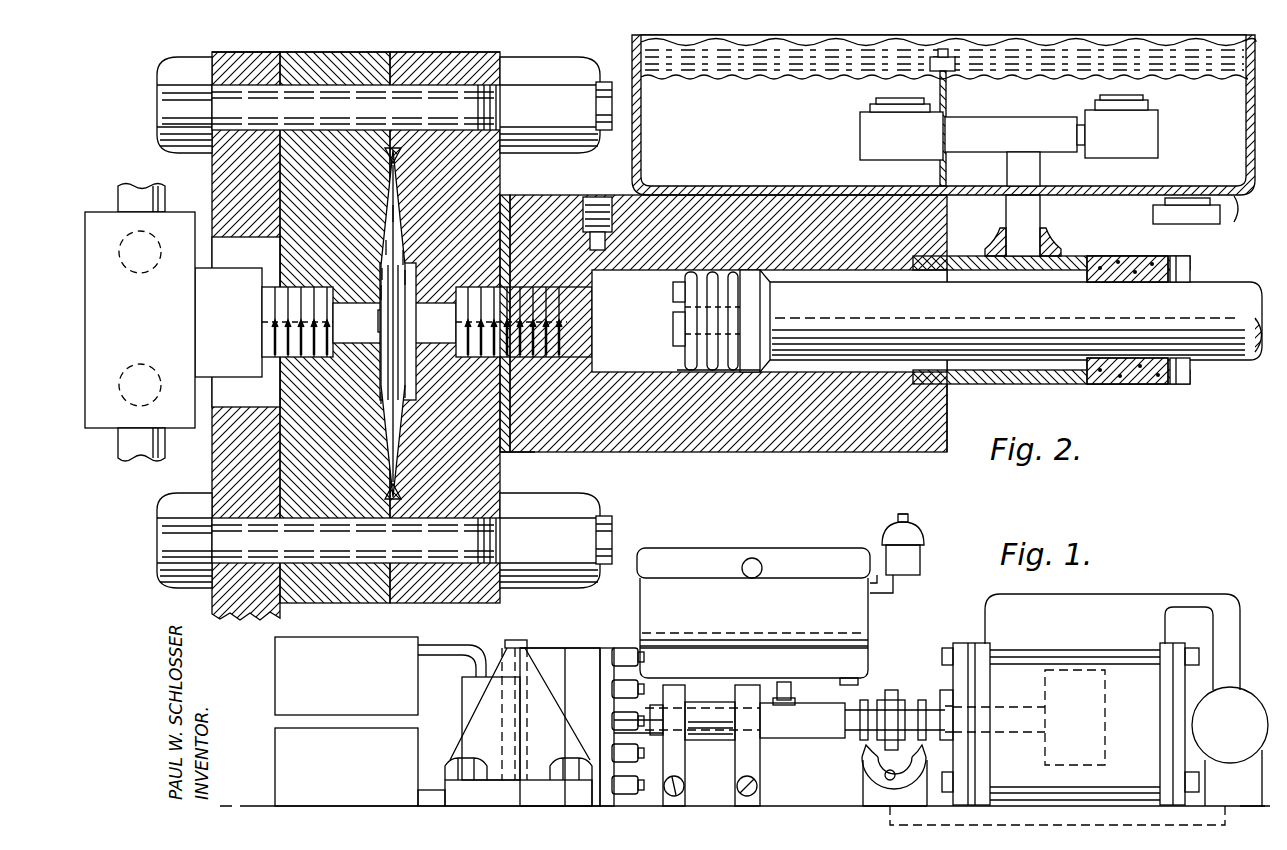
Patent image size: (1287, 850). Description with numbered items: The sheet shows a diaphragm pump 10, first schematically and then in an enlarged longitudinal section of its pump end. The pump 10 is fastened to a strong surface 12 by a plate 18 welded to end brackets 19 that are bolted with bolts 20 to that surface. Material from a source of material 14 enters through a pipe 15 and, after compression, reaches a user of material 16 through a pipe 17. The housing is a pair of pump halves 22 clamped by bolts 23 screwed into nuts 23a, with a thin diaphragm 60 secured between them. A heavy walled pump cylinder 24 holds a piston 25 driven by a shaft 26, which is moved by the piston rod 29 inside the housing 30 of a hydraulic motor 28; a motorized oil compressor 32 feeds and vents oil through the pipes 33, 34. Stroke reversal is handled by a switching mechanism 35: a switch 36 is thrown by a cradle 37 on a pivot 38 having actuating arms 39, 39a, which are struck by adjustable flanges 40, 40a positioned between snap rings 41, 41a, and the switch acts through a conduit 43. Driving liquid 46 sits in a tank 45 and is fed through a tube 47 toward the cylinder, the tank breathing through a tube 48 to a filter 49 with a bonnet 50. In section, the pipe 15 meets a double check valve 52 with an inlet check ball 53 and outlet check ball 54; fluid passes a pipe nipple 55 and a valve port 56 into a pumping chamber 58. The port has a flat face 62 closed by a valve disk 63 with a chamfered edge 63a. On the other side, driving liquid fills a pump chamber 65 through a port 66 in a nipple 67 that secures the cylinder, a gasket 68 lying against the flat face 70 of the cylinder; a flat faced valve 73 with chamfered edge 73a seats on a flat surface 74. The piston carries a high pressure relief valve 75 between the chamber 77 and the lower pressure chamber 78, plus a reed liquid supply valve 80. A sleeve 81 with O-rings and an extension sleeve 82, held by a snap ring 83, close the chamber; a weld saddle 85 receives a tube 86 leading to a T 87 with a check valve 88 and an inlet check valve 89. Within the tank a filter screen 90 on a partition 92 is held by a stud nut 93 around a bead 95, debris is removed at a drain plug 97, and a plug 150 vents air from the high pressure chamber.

In FIG. 2, the pump 10 is at (198, 46).
In FIG. 1, the pump 10 is at (551, 624).
In FIG. 1, the surface 12 is at (590, 805).
In FIG. 1, the source of material 14 is at (275, 746).
In FIG. 2, the pipe 15 is at (120, 447).
In FIG. 1, the pipe 15 is at (428, 788).
In FIG. 1, the user of material 16 is at (275, 680).
In FIG. 2, the pipe 17 is at (118, 196).
In FIG. 1, the pipe 17 is at (432, 646).
In FIG. 2, the plate 18 is at (245, 616).
In FIG. 1, the plate 18 is at (512, 640).
In FIG. 1, the end brackets 19 is at (468, 805).
In FIG. 1, the bolts 20 is at (462, 762).
In FIG. 2, the pump halves 22 is at (352, 56).
In FIG. 1, the pump halves 22 is at (560, 648).
In FIG. 2, the bolts 23 is at (160, 72).
In FIG. 1, the bolts 23 is at (650, 672).
In FIG. 2, the nuts 23a is at (546, 57).
In FIG. 1, the nuts 23a is at (612, 652).
In FIG. 2, the pump cylinder 24 is at (638, 452).
In FIG. 1, the pump cylinder 24 is at (690, 752).
In FIG. 2, the piston 25 is at (657, 356).
In FIG. 1, the piston 25 is at (676, 705).
In FIG. 2, the shaft 26 is at (1052, 322).
In FIG. 1, the shaft 26 is at (784, 738).
In FIG. 1, the hydraulic motor 28 is at (967, 598).
In FIG. 1, the piston rod 29 is at (1106, 752).
In FIG. 1, the housing 30 is at (1022, 690).
In FIG. 1, the oil compressor 32 is at (1240, 733).
In FIG. 1, the pipe 33 is at (1082, 596).
In FIG. 1, the pipe 34 is at (1192, 608).
In FIG. 1, the switching mechanism 35 is at (911, 638).
In FIG. 1, the switch 36 is at (862, 796).
In FIG. 1, the cradle 37 is at (866, 776).
In FIG. 1, the pivot 38 is at (891, 781).
In FIG. 1, the actuating arm 39 is at (928, 758).
In FIG. 1, the actuating arm 39a is at (870, 757).
In FIG. 1, the adjustable flange 40 is at (910, 680).
In FIG. 1, the adjustable flange 40a is at (887, 690).
In FIG. 1, the snap ring 41 is at (922, 698).
In FIG. 1, the snap ring 41a is at (860, 705).
In FIG. 1, the conduit 43 is at (1016, 826).
In FIG. 2, the tank 45 is at (1222, 222).
In FIG. 1, the tank 45 is at (752, 617).
In FIG. 1, the driving liquid 46 is at (794, 632).
In FIG. 1, the tube 47 is at (790, 690).
In FIG. 1, the tube 48 is at (875, 575).
In FIG. 1, the filter 49 is at (920, 552).
In FIG. 1, the bonnet 50 is at (910, 520).
In FIG. 2, the double check valve 52 is at (124, 320).
In FIG. 2, the inlet check ball 53 is at (158, 376).
In FIG. 2, the outlet check ball 54 is at (160, 262).
In FIG. 2, the pipe nipple 55 is at (268, 282).
In FIG. 2, the valve port 56 is at (312, 328).
In FIG. 2, the pumping chamber 58 is at (384, 246).
In FIG. 2, the diaphragm 60 is at (388, 218).
In FIG. 2, the flat face 62 is at (380, 273).
In FIG. 2, the valve disk 63 is at (380, 288).
In FIG. 2, the chamfered edge 63a is at (380, 400).
In FIG. 2, the pump chamber 65 is at (412, 230).
In FIG. 2, the port 66 is at (412, 340).
In FIG. 2, the nipple 67 is at (473, 286).
In FIG. 2, the gasket 68 is at (506, 195).
In FIG. 2, the flat face 70 is at (514, 452).
In FIG. 2, the flat faced valve 73 is at (410, 280).
In FIG. 2, the chamfered edge 73a is at (412, 392).
In FIG. 2, the flat surface 74 is at (410, 257).
In FIG. 2, the high pressure relief valve 75 is at (672, 318).
In FIG. 2, the chamber 77 is at (630, 299).
In FIG. 2, the chamber 78 is at (978, 374).
In FIG. 2, the liquid supply valve 80 is at (678, 294).
In FIG. 2, the sleeve 81 is at (1135, 262).
In FIG. 2, the extension sleeve 82 is at (1072, 257).
In FIG. 2, the snap ring 83 is at (1190, 374).
In FIG. 2, the weld saddle 85 is at (1048, 228).
In FIG. 2, the tube 86 is at (1005, 204).
In FIG. 2, the T 87 is at (1032, 142).
In FIG. 2, the check valve 88 is at (1160, 138).
In FIG. 2, the inlet check valve 89 is at (859, 142).
In FIG. 2, the filter screen 90 is at (748, 80).
In FIG. 2, the partition 92 is at (946, 92).
In FIG. 2, the stud nut 93 is at (956, 62).
In FIG. 2, the bead 95 is at (650, 82).
In FIG. 1, the bead 95 is at (718, 642).
In FIG. 2, the drain plug 97 is at (1153, 213).
In FIG. 2, the plug 150 is at (590, 197).